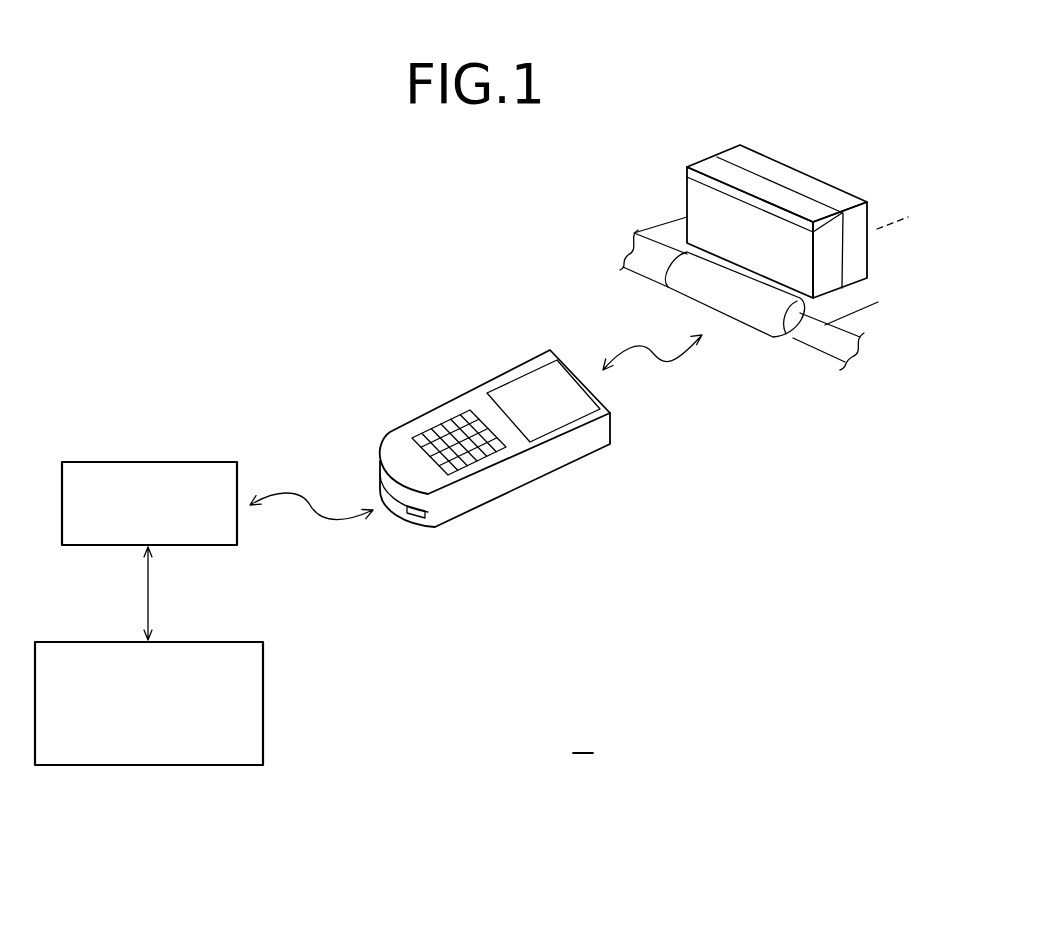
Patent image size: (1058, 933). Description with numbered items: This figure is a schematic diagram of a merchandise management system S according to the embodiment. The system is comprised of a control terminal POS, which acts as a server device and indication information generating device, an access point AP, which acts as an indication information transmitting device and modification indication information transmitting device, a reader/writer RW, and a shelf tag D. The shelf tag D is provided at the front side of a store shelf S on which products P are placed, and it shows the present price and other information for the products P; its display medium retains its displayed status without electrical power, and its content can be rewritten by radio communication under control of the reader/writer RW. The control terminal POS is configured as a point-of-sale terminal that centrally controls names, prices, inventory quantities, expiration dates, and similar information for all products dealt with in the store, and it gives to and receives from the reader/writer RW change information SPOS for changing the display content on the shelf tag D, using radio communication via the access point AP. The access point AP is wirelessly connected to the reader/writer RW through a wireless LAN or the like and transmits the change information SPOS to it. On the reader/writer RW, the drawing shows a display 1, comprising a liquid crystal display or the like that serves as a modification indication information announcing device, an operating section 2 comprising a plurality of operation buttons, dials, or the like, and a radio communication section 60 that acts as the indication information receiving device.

The display 1 is at (537, 378).
The operating section 2 is at (462, 473).
The radio communication section 60 is at (408, 513).
The reader/writer RW is at (508, 497).
The access point AP is at (105, 462).
The control terminal POS is at (213, 767).
The change information SPOS is at (150, 598).
The products P is at (703, 162).
The store shelf S is at (665, 228).
The shelf tag D is at (740, 323).